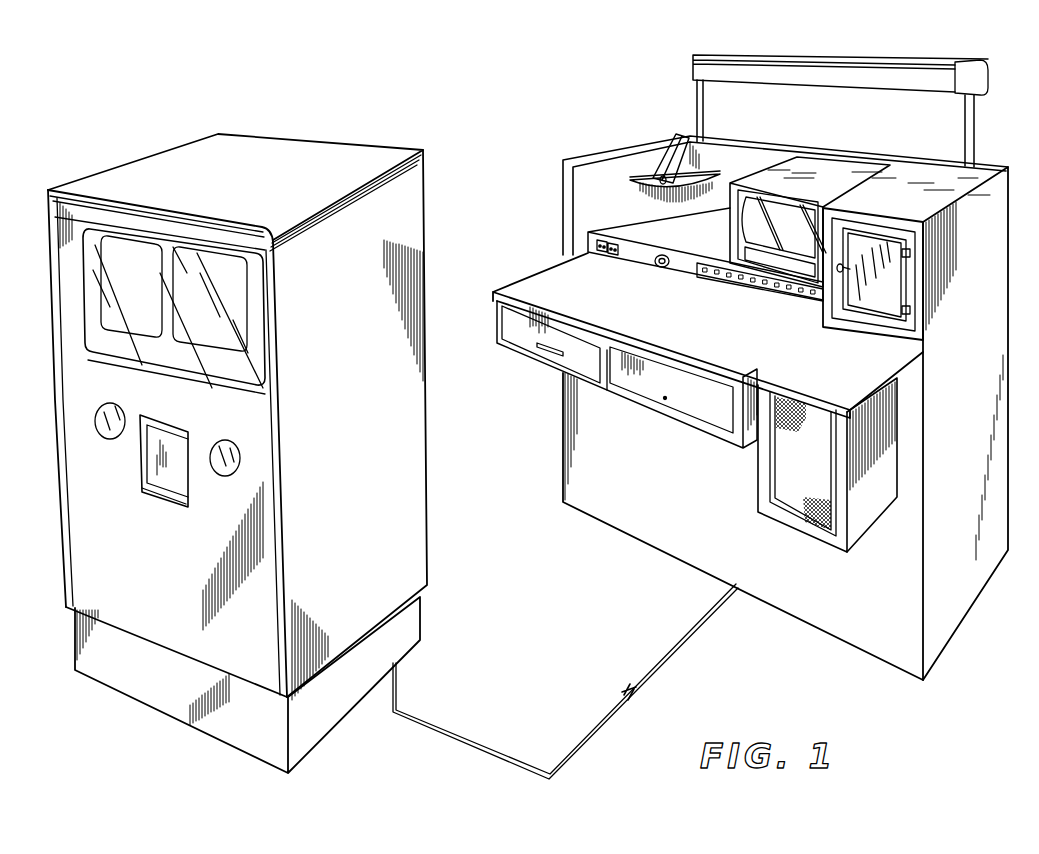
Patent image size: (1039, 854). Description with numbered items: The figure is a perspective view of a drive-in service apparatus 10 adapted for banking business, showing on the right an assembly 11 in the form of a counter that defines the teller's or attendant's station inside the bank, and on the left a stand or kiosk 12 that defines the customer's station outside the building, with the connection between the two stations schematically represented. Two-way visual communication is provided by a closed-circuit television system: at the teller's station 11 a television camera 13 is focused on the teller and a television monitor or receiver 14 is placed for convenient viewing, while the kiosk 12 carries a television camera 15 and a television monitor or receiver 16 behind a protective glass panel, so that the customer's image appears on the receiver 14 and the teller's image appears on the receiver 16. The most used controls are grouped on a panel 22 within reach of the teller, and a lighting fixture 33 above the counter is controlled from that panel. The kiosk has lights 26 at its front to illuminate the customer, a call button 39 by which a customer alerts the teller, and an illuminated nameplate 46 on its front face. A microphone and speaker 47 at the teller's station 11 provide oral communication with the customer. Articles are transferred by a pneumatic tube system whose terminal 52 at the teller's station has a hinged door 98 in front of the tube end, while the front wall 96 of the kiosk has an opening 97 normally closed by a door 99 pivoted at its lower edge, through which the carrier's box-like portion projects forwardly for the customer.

The drive-in service apparatus 10 is at (433, 143).
The assembly defining teller's station 11 is at (583, 128).
The stand or kiosk 12 is at (139, 138).
The television camera 13 is at (687, 137).
The television monitor or receiver 14 is at (823, 170).
The television camera 15 is at (123, 283).
The television monitor or receiver 16 is at (248, 320).
The panel 22 is at (780, 306).
The lights 26 is at (96, 423).
The lighting fixture 33 is at (827, 78).
The call button 39 is at (152, 424).
The nameplate 46 is at (254, 250).
The microphone and speaker 47 is at (659, 266).
The terminal 52 is at (890, 336).
The front wall 96 is at (130, 534).
The opening 97 is at (148, 492).
The hinged door 98 is at (864, 312).
The door 99 is at (150, 465).